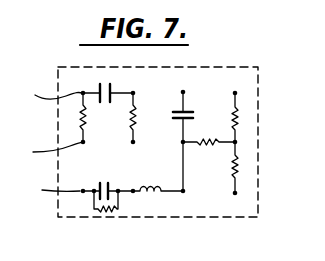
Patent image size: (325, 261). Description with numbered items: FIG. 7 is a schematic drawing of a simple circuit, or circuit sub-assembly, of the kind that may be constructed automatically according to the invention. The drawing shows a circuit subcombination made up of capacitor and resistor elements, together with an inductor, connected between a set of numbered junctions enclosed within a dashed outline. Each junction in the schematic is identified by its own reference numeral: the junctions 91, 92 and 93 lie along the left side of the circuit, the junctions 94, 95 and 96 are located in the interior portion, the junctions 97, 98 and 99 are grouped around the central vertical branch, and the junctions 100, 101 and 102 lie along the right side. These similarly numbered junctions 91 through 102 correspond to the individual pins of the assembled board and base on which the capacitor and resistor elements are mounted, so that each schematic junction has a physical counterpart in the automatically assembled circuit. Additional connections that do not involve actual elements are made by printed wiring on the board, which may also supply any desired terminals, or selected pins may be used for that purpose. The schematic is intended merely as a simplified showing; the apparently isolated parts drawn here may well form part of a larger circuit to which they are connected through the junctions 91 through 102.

The junction 91 is at (55, 189).
The junction 92 is at (50, 151).
The junction 93 is at (56, 87).
The junction 94 is at (141, 173).
The junction 95 is at (133, 142).
The junction 96 is at (133, 92).
The junction 97 is at (184, 192).
The junction 98 is at (183, 142).
The junction 99 is at (183, 92).
The junction 100 is at (235, 193).
The junction 101 is at (235, 142).
The junction 102 is at (235, 93).